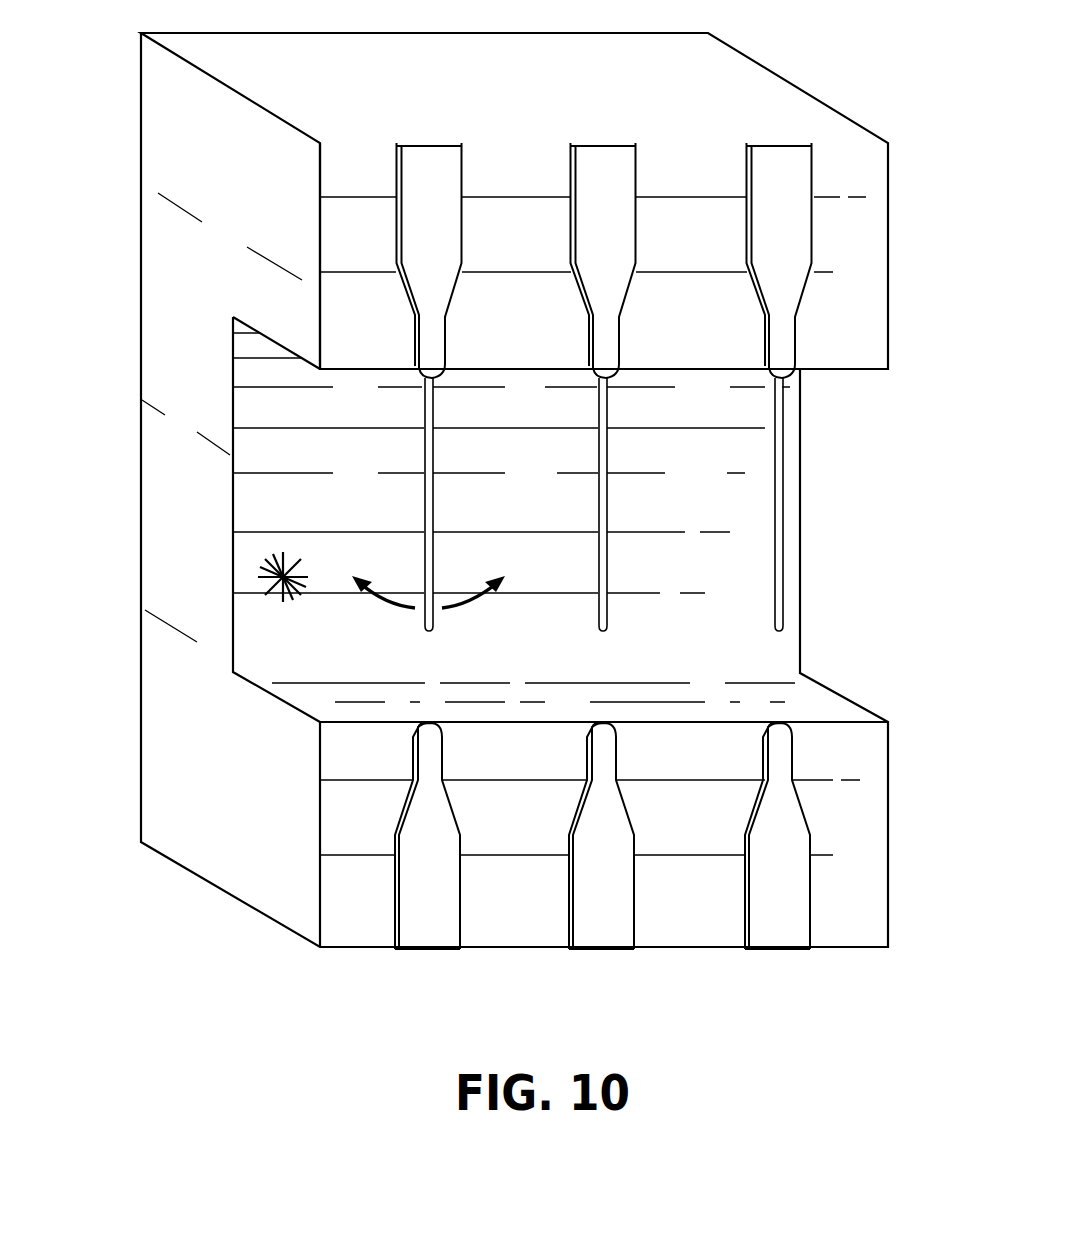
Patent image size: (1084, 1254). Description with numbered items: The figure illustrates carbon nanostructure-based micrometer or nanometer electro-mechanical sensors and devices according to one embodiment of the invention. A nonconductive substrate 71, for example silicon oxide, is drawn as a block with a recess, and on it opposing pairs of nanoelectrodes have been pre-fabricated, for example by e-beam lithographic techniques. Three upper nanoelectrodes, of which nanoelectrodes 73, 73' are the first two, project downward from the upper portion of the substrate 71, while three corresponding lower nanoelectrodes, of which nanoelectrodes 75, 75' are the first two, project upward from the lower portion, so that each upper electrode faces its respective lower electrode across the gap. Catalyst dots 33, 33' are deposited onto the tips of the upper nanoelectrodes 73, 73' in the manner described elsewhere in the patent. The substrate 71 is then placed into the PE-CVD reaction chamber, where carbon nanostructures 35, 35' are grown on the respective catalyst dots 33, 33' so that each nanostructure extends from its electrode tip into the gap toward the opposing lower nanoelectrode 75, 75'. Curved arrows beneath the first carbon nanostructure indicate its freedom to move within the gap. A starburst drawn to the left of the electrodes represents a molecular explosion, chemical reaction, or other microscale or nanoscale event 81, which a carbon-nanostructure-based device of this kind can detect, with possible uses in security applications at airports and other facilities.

The substrate 71 is at (890, 230).
The nanoelectrode 73 is at (412, 217).
The nanoelectrode 73' is at (579, 217).
The catalyst dot 33 is at (390, 391).
The catalyst dot 33' is at (561, 391).
The carbon nanostructure 35 is at (384, 504).
The carbon nanostructure 35' is at (555, 504).
The nanoelectrode 75 is at (409, 875).
The nanoelectrode 75' is at (582, 875).
The microscale or nanoscale event 81 is at (267, 575).